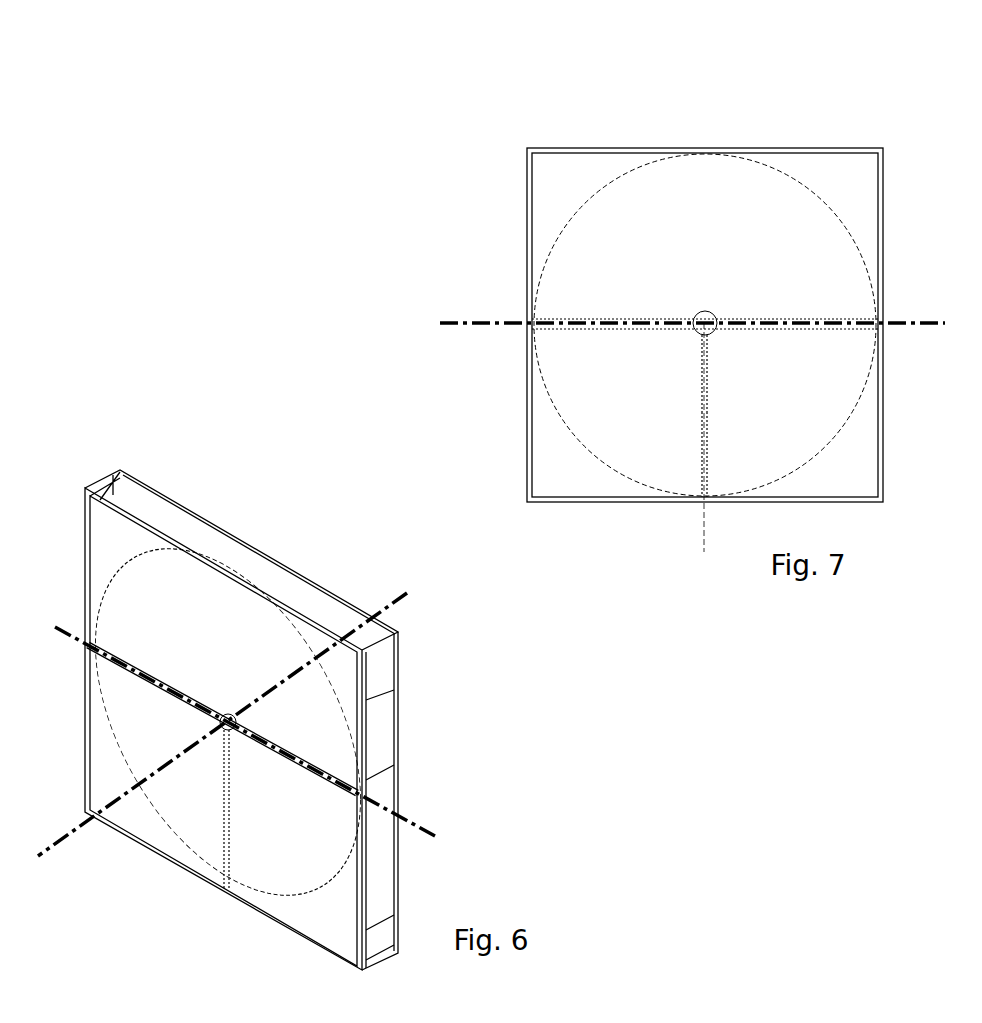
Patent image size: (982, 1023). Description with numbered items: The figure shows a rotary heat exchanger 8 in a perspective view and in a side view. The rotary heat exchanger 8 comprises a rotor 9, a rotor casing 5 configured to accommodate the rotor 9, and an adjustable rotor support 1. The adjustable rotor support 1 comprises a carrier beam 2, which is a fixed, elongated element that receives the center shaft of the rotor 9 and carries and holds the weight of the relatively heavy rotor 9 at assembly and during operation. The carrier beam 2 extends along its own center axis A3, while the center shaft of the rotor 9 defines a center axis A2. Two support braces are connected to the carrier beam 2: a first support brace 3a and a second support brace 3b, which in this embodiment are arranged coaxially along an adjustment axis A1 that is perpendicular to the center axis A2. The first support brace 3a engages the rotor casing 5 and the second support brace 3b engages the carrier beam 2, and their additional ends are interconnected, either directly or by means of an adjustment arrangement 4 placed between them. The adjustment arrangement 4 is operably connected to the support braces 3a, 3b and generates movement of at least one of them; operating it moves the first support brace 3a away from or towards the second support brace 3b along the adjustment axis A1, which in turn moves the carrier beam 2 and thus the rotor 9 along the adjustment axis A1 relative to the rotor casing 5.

In FIG. 6, the adjustable rotor support 1 is at (256, 728).
In FIG. 7, the carrier beam 2 is at (588, 320).
In FIG. 6, the carrier beam 2 is at (143, 675).
In FIG. 7, the first support brace 3a is at (705, 463).
In FIG. 6, the first support brace 3a is at (222, 842).
In FIG. 7, the second support brace 3b is at (702, 402).
In FIG. 6, the second support brace 3b is at (222, 777).
In FIG. 7, the adjustment arrangement 4 is at (684, 428).
In FIG. 6, the adjustment arrangement 4 is at (215, 890).
In FIG. 7, the rotor casing 5 is at (558, 187).
In FIG. 6, the rotor casing 5 is at (108, 530).
In FIG. 7, the rotary heat exchanger 8 is at (676, 126).
In FIG. 6, the rotary heat exchanger 8 is at (492, 850).
In FIG. 7, the rotor 9 is at (735, 188).
In FIG. 6, the rotor 9 is at (263, 578).
In FIG. 7, the adjustment axis A1 is at (703, 528).
In FIG. 7, the center axis of the center shaft A2 is at (502, 320).
In FIG. 6, the center axis of the center shaft A2 is at (47, 852).
In FIG. 6, the center axis of the carrier beam A3 is at (393, 827).